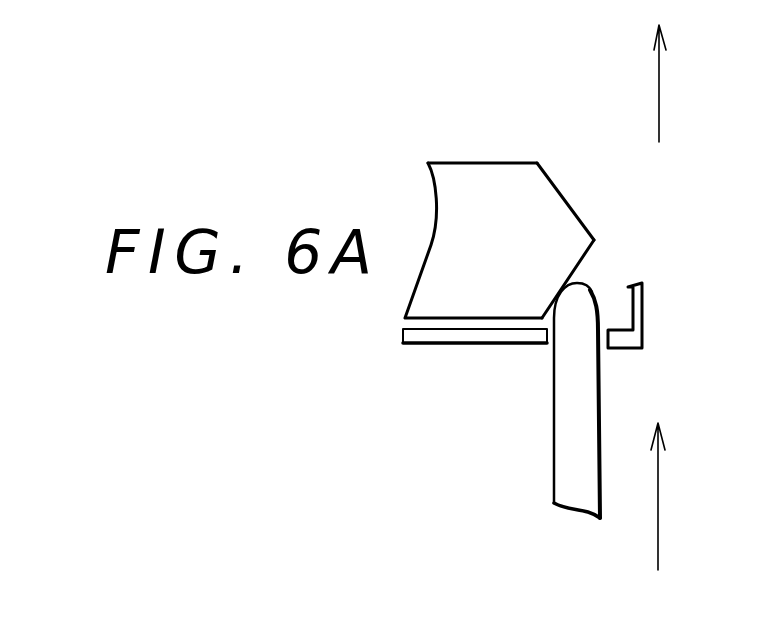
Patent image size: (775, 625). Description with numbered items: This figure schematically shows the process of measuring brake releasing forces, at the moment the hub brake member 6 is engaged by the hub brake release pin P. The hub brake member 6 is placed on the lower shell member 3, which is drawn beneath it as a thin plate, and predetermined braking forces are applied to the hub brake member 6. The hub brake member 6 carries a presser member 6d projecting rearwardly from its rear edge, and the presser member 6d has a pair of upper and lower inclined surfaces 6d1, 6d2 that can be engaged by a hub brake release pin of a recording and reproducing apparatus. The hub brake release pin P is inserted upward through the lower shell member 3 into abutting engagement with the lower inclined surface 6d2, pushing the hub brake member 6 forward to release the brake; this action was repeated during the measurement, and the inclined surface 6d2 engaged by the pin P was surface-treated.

The hub brake member 6 is at (460, 163).
The presser member 6d is at (507, 188).
The upper inclined surface 6d1 is at (567, 197).
The lower inclined surface 6d2 is at (587, 263).
The lower shell member 3 is at (445, 335).
The hub brake release pin P is at (582, 398).